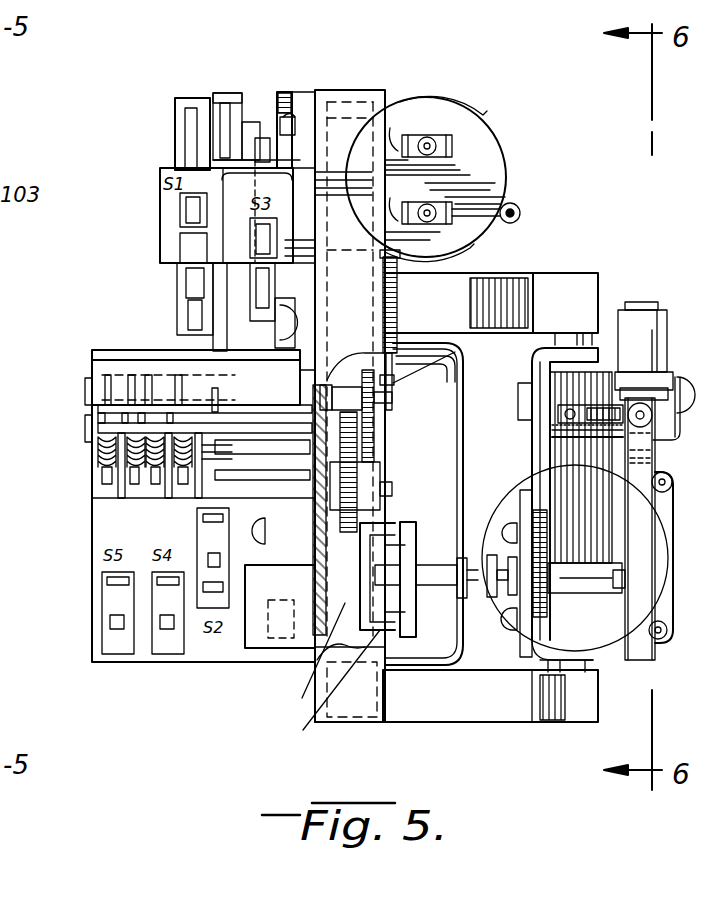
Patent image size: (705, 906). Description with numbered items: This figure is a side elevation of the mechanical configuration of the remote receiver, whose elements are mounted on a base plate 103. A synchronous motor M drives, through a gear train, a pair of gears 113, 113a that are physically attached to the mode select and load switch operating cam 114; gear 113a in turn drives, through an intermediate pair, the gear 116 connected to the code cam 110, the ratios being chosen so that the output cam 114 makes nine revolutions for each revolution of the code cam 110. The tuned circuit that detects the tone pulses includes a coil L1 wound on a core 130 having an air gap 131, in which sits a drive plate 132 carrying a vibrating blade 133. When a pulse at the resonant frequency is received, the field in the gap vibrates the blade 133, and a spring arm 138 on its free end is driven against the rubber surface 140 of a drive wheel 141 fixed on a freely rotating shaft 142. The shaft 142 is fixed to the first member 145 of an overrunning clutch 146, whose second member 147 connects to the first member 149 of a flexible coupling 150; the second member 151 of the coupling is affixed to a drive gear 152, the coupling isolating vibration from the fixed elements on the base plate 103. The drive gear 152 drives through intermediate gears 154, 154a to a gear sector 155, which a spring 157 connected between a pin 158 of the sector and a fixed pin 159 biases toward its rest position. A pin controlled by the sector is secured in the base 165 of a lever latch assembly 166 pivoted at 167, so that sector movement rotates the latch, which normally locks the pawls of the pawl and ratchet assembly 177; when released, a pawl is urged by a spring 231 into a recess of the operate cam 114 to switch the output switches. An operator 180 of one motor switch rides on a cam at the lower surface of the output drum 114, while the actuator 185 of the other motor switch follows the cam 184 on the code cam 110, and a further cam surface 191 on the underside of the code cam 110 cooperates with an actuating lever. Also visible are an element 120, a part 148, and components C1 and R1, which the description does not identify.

The base plate 103 is at (325, 92).
The code cam 110 is at (182, 108).
The gear 113 is at (238, 500).
The gear 113a is at (295, 510).
The mode select and load switch operating cam 114 is at (110, 350).
The code cam drive gear 116 is at (285, 92).
The post 120 is at (192, 108).
The core 130 is at (568, 348).
The air gap 131 is at (560, 432).
The drive plate 132 is at (548, 468).
The vibrating blade 133 is at (565, 440).
The spring arm 138 is at (622, 508).
The rubber surface 140 is at (645, 665).
The drive wheel 141 is at (650, 640).
The shaft 142 is at (625, 593).
The first member of overrunning clutch 145 is at (477, 600).
The overrunning clutch 146 is at (465, 600).
The second member of overrunning clutch 147 is at (448, 545).
The plate 148 is at (412, 638).
The first member of flexible coupling 149 is at (395, 665).
The flexible coupling 150 is at (320, 688).
The second member of flexible coupling 151 is at (302, 658).
The drive gear 152 is at (330, 650).
The intermediate gear 154 is at (357, 440).
The intermediate gear 154a is at (380, 472).
The gear sector 155 is at (376, 418).
The spring 157 is at (398, 312).
The pin 158 is at (458, 360).
The fixed pin 159 is at (398, 262).
The base 165 is at (300, 370).
The lever latch assembly 166 is at (102, 362).
The pivot 167 is at (85, 388).
The pawl and ratchet assembly 177 is at (128, 478).
The operator 180 is at (214, 395).
The cam 184 is at (263, 135).
The actuator 185 is at (298, 147).
The cam surface 191 is at (246, 105).
The spring 231 is at (128, 462).
The capacitor C1 is at (500, 132).
The resistor R1 is at (520, 208).
The synchronous motor M is at (455, 385).
The coil L1 is at (597, 652).